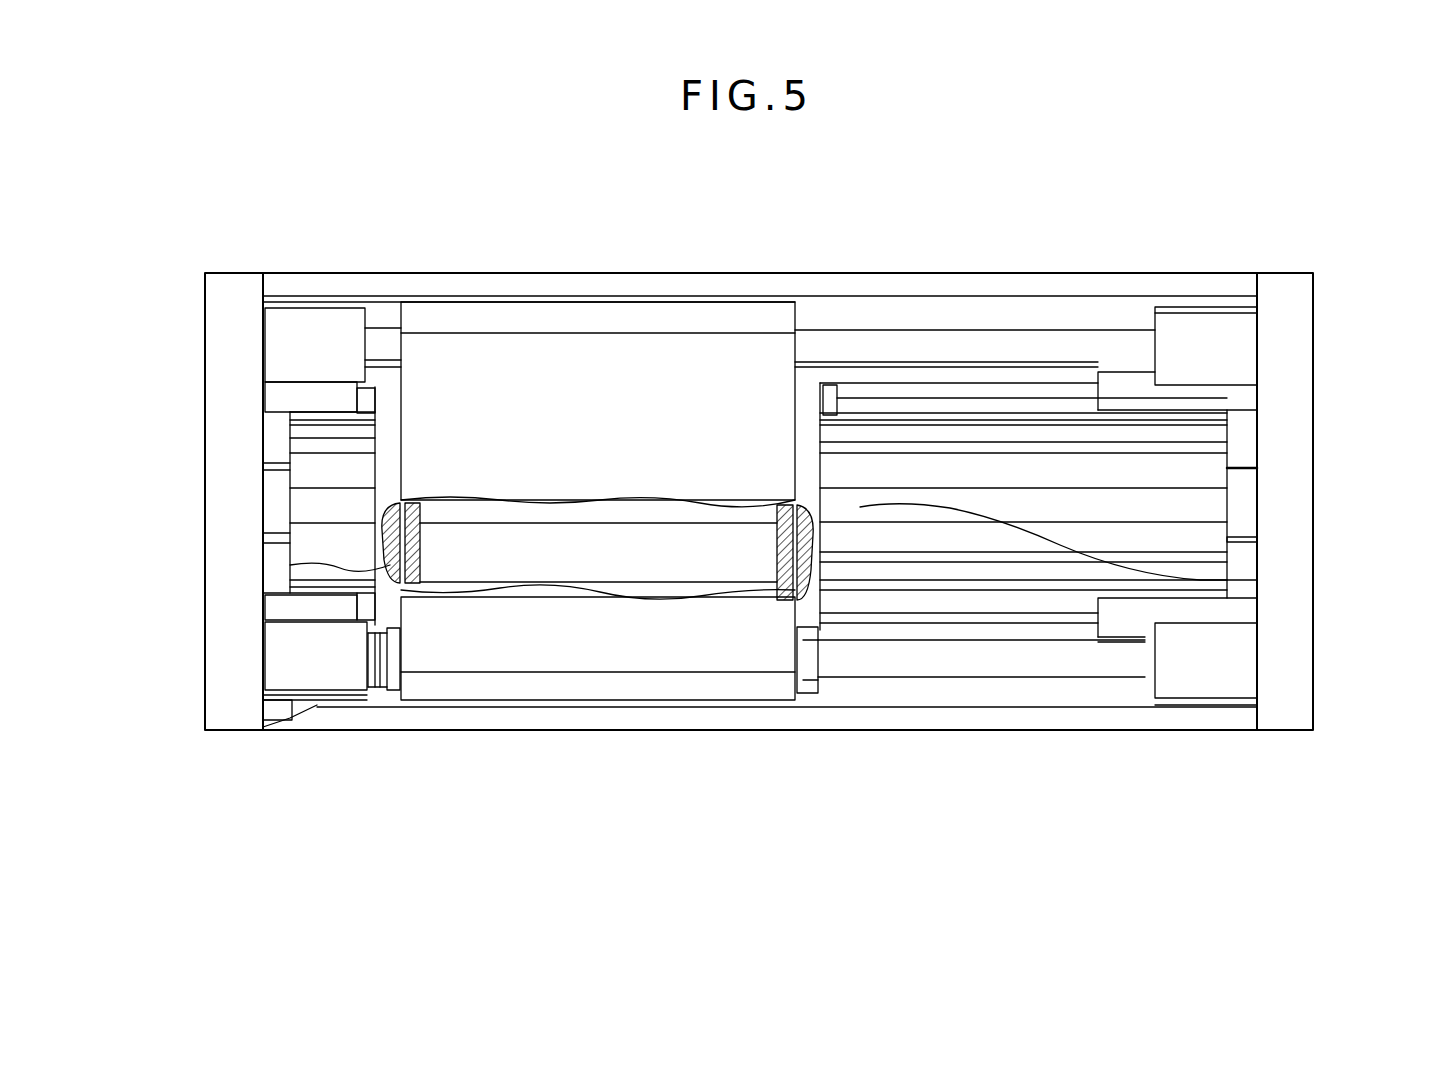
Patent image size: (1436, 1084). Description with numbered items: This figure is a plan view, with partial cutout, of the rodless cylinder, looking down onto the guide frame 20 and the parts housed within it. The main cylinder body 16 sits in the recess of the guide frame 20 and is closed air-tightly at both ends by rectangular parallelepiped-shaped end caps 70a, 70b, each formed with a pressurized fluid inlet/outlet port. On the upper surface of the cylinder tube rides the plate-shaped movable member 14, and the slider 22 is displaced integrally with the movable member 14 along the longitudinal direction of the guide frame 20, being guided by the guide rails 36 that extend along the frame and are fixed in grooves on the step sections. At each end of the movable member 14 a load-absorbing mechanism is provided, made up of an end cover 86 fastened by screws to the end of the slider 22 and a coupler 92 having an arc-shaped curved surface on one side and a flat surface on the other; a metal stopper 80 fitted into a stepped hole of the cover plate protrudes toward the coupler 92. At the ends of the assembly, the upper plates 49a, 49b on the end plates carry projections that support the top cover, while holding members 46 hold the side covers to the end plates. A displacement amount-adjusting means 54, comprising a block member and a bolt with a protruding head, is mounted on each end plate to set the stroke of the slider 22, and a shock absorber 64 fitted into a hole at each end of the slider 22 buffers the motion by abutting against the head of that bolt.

The movable member 14 is at (575, 560).
The main cylinder body 16 is at (1182, 480).
The guide frame 20 is at (652, 738).
The slider 22 is at (517, 360).
The guide rail 36 is at (930, 315).
The holding member 46 is at (1110, 385).
The upper plate 49a is at (232, 715).
The upper plate 49b is at (1288, 715).
The displacement amount-adjusting means 54 is at (300, 330).
The shock absorber 64 is at (390, 690).
The end cap 70a is at (280, 505).
The end cap 70b is at (1240, 520).
The stopper 80 is at (405, 548).
The end cover 86 is at (805, 405).
The coupler 92 is at (1257, 580).